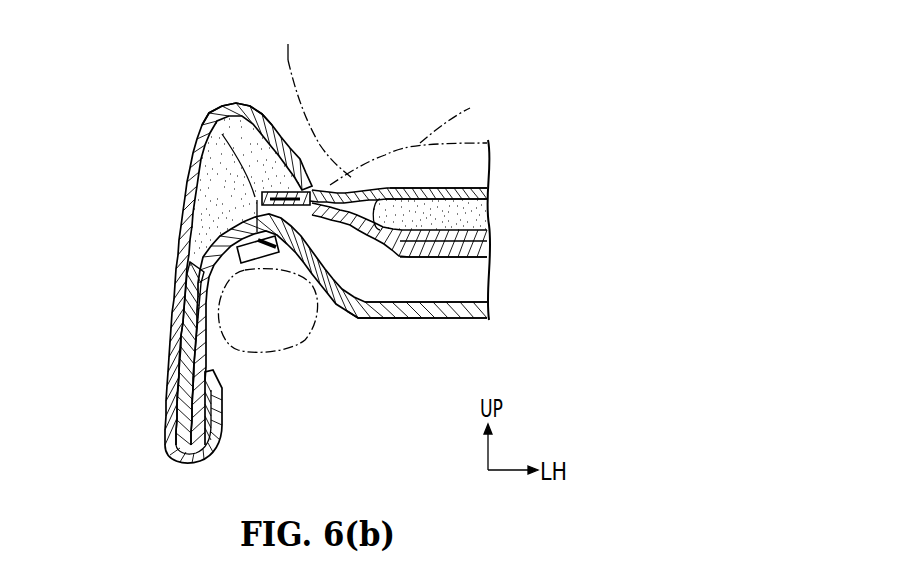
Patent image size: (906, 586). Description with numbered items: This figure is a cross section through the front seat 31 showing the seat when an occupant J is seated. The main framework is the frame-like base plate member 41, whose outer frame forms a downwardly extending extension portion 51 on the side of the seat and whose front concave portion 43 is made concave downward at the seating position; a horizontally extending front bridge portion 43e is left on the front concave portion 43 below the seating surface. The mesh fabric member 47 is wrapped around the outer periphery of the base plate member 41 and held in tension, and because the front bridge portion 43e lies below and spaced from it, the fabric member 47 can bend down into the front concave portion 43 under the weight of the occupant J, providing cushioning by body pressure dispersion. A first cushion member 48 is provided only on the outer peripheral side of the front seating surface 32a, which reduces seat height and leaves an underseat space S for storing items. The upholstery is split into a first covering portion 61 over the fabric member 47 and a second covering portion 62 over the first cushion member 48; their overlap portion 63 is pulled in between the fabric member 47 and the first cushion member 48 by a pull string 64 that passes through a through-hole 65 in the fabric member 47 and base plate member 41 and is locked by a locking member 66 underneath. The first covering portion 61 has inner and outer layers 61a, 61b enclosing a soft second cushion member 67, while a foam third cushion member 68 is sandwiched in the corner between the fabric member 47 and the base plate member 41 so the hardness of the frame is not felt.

The front seat 31 is at (449, 88).
The front seating surface 32a is at (440, 186).
The base plate member 41 is at (404, 326).
The front concave portion 43 is at (462, 284).
The front bridge portion 43e is at (448, 318).
The fabric member 47 is at (478, 268).
The first cushion member 48 is at (237, 116).
The extension portion 51 is at (195, 398).
The first covering portion 61 is at (398, 156).
The inner layer 61a is at (378, 204).
The outer layer 61b is at (405, 189).
The second covering portion 62 is at (182, 155).
The overlap portion 63 is at (267, 191).
The pull string 64 is at (222, 134).
The through-hole 65 is at (245, 201).
The locking member 66 is at (195, 252).
The second cushion member 67 is at (488, 217).
The third cushion member 68 is at (312, 237).
The occupant J is at (285, 52).
The underseat space S is at (280, 355).